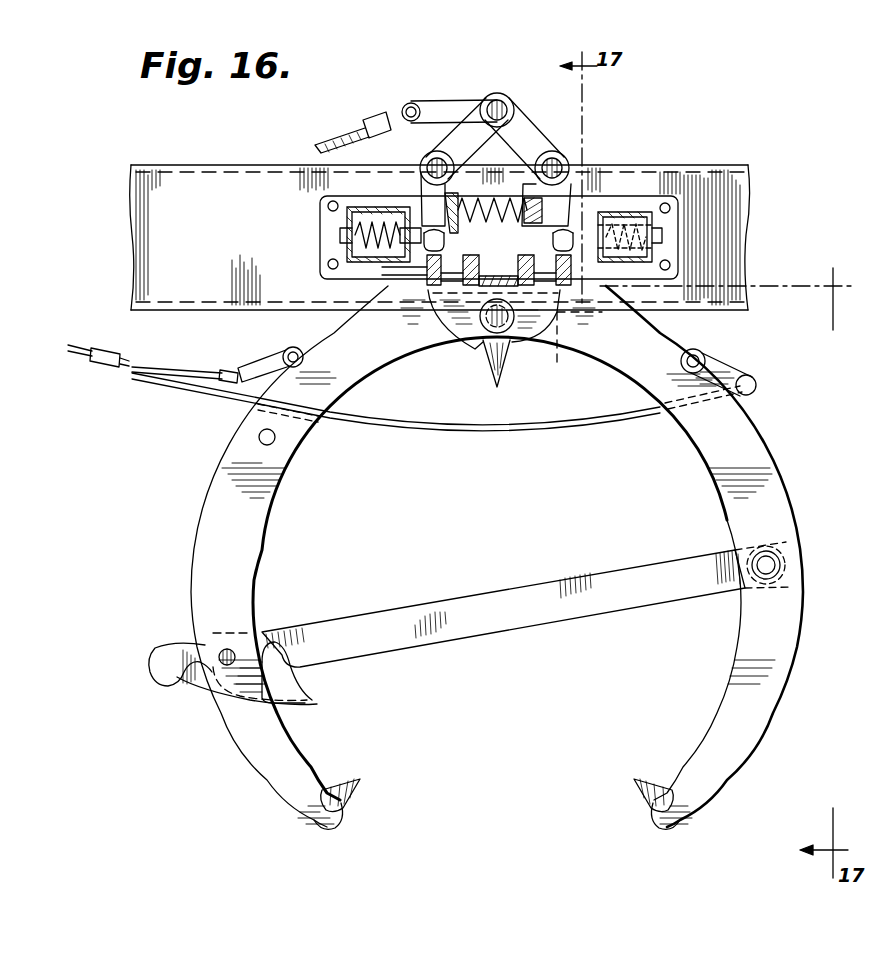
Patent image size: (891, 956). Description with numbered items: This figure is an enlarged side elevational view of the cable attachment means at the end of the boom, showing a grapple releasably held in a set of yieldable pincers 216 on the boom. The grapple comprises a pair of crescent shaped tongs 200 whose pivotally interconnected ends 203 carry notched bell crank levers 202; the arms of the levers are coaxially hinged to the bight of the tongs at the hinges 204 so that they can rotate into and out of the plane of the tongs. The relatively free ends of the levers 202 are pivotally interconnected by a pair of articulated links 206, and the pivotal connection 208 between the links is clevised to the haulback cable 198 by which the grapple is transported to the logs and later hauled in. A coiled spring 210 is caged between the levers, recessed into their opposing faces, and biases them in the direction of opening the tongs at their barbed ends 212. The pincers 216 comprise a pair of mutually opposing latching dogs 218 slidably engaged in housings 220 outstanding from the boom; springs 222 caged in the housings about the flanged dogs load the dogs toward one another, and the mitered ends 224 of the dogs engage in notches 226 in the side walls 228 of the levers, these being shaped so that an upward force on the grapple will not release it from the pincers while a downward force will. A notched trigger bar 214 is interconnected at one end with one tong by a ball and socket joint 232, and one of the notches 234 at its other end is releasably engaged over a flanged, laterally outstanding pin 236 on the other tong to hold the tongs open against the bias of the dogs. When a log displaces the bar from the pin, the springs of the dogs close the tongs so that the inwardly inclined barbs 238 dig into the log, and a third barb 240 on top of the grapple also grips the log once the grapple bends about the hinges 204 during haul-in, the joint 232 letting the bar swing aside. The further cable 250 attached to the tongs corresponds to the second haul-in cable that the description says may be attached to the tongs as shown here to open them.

The haulback cable 198 is at (318, 134).
The tongs 200 is at (236, 580).
The bell crank levers 202 is at (420, 188).
The pivotally interconnected ends 203 is at (528, 340).
The hinges 204 is at (526, 266).
The articulated links 206 is at (456, 128).
The pivotal connection 208 is at (494, 100).
The coiled spring 210 is at (543, 143).
The barbed ends 212 is at (336, 820).
The trigger bar 214 is at (521, 612).
The pincers 216 is at (303, 233).
The latching dogs 218 is at (412, 267).
The housings 220 is at (348, 230).
The springs 222 is at (350, 245).
The ends of the dogs 224 is at (640, 308).
The notches 226 is at (396, 300).
The side walls 228 is at (447, 200).
The ball and socket joint 232 is at (780, 568).
The notches 234 is at (304, 703).
The pin 236 is at (226, 650).
The barbs 238 is at (346, 784).
The third barb 240 is at (498, 366).
The cable 250 is at (196, 388).